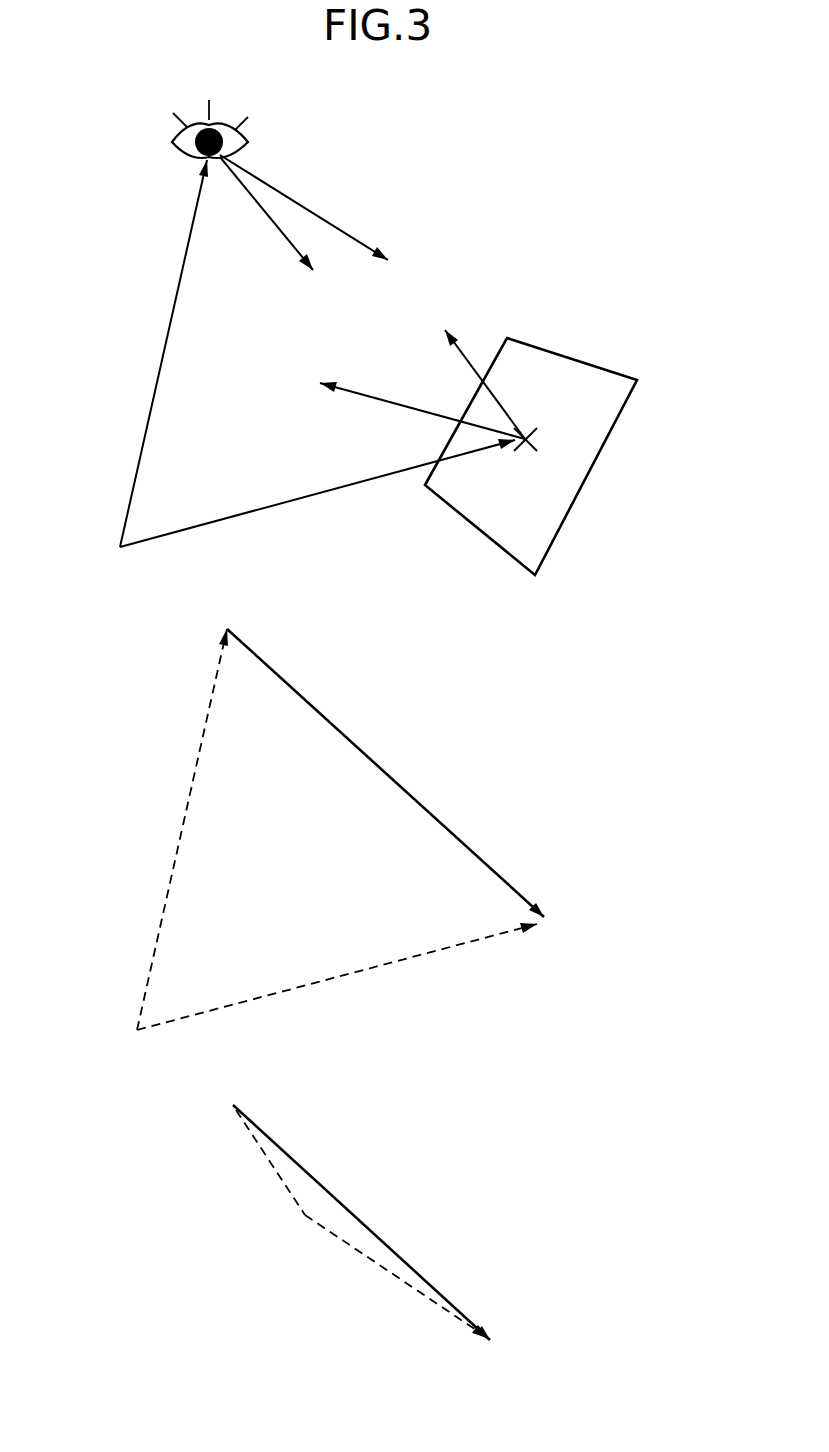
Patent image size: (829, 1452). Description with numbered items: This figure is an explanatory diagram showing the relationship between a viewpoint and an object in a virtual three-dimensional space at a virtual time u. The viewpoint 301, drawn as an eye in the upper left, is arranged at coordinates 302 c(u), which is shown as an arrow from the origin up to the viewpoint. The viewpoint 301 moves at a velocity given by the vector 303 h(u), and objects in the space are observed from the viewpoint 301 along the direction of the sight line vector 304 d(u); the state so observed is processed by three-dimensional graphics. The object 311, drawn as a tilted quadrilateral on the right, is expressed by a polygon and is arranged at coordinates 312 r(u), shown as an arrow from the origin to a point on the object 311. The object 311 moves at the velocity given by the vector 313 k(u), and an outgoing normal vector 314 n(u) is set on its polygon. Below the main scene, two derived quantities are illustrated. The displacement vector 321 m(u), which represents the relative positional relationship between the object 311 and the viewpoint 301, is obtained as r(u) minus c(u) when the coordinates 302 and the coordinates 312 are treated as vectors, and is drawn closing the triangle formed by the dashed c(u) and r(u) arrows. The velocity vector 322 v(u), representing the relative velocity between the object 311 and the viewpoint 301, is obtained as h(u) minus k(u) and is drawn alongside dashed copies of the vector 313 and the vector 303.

The viewpoint 301 is at (245, 138).
The coordinates c(u) 302 is at (163, 350).
The vector h(u) 303 is at (300, 198).
The sight line vector d(u) 304 is at (265, 223).
The object 311 is at (597, 378).
The coordinates r(u) 312 is at (268, 507).
The vector k(u) 313 is at (465, 347).
The outgoing normal vector n(u) 314 is at (397, 407).
The displacement vector m(u) 321 is at (323, 716).
The velocity vector v(u) 322 is at (300, 1165).